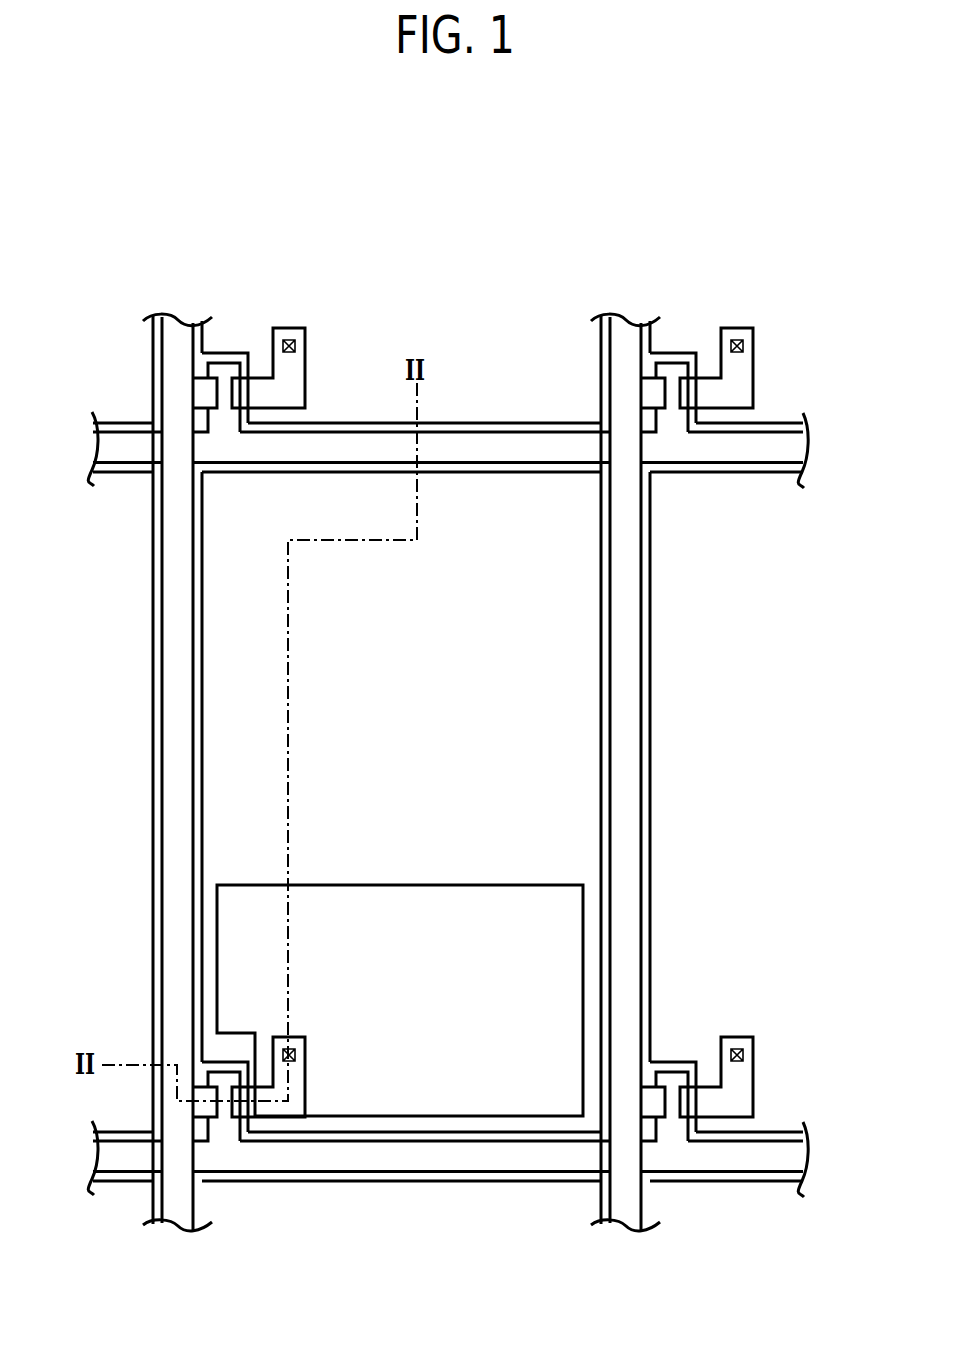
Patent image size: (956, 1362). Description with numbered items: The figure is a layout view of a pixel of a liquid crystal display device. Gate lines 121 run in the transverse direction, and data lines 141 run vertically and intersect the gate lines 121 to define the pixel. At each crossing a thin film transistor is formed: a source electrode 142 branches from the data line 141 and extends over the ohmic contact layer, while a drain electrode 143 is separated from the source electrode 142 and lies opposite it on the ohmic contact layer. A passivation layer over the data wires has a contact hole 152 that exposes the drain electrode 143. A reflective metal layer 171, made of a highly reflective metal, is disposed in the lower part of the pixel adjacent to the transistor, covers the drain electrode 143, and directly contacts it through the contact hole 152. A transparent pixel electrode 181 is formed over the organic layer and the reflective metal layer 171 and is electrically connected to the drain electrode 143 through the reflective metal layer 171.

The gate line 121 is at (436, 1172).
The data line 141 is at (160, 902).
The source electrode 142 is at (197, 1120).
The drain electrode 143 is at (306, 1103).
The contact hole 152 is at (753, 1050).
The reflective metal layer 171 is at (217, 965).
The pixel electrode 181 is at (200, 827).